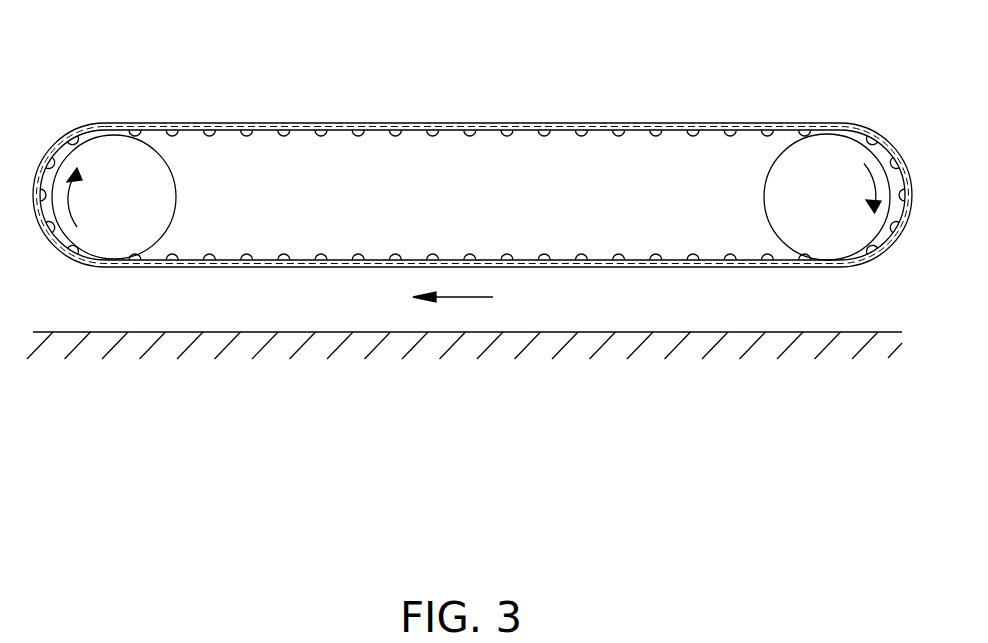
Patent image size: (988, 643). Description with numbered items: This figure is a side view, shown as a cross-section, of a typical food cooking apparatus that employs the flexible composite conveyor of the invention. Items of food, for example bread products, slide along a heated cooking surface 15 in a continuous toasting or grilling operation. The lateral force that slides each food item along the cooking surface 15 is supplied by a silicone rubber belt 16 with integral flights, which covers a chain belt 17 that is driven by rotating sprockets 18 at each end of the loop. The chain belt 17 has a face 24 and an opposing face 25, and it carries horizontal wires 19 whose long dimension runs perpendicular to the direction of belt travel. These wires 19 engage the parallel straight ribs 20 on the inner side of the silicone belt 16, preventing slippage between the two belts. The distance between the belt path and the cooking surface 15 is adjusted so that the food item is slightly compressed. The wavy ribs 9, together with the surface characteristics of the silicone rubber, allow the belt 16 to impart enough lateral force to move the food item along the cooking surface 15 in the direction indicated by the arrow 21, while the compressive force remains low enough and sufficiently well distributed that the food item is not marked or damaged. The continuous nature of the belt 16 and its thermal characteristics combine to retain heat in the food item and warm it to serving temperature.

The wavy ribs 9 is at (472, 153).
The heated cooking surface 15 is at (320, 347).
The silicone rubber belt 16 is at (242, 124).
The chain belt 17 is at (437, 258).
The sprockets 18 is at (117, 182).
The horizontal wires 19 is at (337, 123).
The parallel straight ribs 20 is at (403, 123).
The arrow 21 is at (455, 300).
The face 24 is at (605, 123).
The opposing face 25 is at (605, 131).